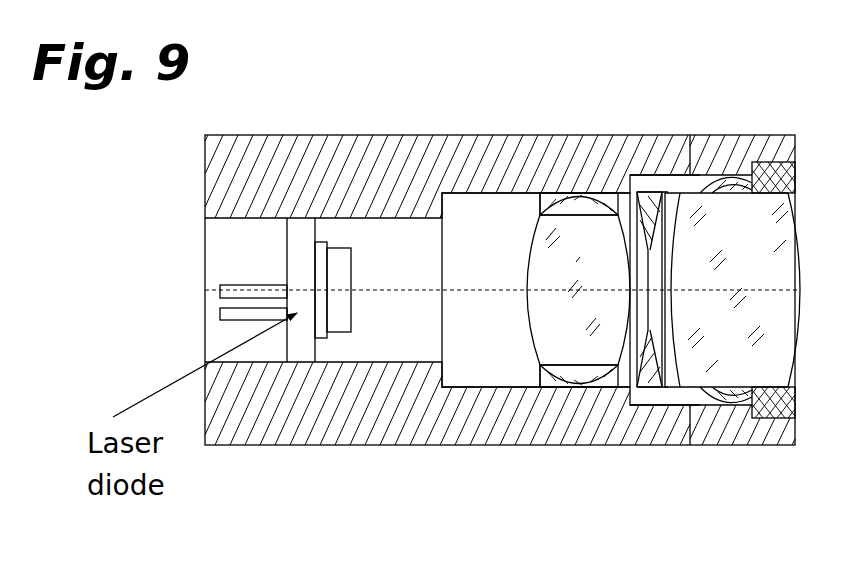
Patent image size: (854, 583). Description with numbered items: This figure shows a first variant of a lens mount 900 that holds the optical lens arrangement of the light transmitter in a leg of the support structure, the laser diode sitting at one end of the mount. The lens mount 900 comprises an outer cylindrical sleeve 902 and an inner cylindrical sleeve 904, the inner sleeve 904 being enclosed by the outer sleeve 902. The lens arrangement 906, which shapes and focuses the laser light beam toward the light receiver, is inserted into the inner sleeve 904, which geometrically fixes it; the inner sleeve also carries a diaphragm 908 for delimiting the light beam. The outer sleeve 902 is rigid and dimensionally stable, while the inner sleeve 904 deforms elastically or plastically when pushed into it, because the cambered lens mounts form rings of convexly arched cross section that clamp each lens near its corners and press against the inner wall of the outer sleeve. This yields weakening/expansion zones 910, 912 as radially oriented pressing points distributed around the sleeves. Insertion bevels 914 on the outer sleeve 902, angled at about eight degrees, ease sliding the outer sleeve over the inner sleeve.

The lens mount 900 is at (536, 290).
The outer cylindrical sleeve 902 is at (362, 387).
The inner cylindrical sleeve 904 is at (635, 387).
The lens arrangement 906 is at (733, 357).
The diaphragm 908 is at (643, 227).
The weakening/expansion zone 910 is at (565, 185).
The weakening/expansion zone 912 is at (720, 170).
The insertion bevel 914 is at (622, 182).